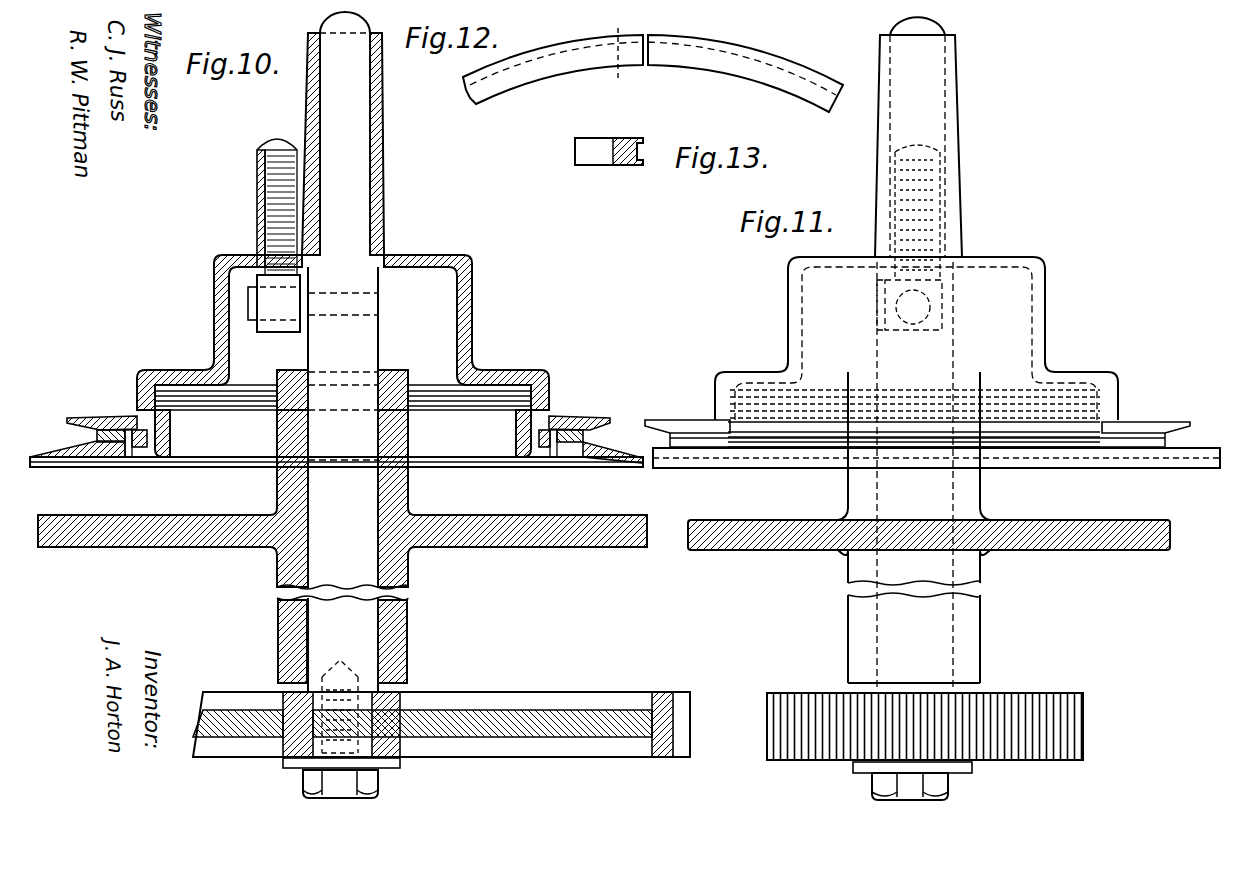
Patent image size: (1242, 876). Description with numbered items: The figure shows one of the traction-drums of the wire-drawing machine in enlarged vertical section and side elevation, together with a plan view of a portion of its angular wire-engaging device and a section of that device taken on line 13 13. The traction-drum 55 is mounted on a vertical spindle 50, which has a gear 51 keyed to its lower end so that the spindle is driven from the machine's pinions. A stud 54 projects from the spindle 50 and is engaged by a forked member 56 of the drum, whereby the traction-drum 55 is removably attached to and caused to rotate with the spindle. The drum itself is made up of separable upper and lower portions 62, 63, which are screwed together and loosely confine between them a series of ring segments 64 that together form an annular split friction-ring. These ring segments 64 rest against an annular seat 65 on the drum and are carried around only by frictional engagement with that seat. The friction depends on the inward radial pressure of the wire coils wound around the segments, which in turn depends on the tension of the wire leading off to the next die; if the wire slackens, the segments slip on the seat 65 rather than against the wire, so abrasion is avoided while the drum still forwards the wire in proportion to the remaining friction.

In FIG. 12, the section line 13 13 is at (613, 55).
In FIG. 10, the spindle 50 is at (365, 348).
In FIG. 10, the gear 51 is at (592, 705).
In FIG. 11, the gear 51 is at (798, 705).
In FIG. 10, the stud 54 is at (252, 310).
In FIG. 11, the stud 54 is at (914, 320).
In FIG. 10, the traction-drum 55 is at (472, 312).
In FIG. 11, the traction-drum 55 is at (1015, 332).
In FIG. 10, the forked member 56 is at (275, 292).
In FIG. 11, the forked member 56 is at (890, 310).
In FIG. 10, the upper portion 62 is at (470, 382).
In FIG. 10, the lower portion 63 is at (588, 460).
In FIG. 10, the ring segment 64 is at (75, 425).
In FIG. 11, the ring segment 64 is at (685, 437).
In FIG. 12, the ring segment 64 is at (514, 72).
In FIG. 13, the ring segment 64 is at (600, 168).
In FIG. 10, the annular seat 65 is at (560, 432).